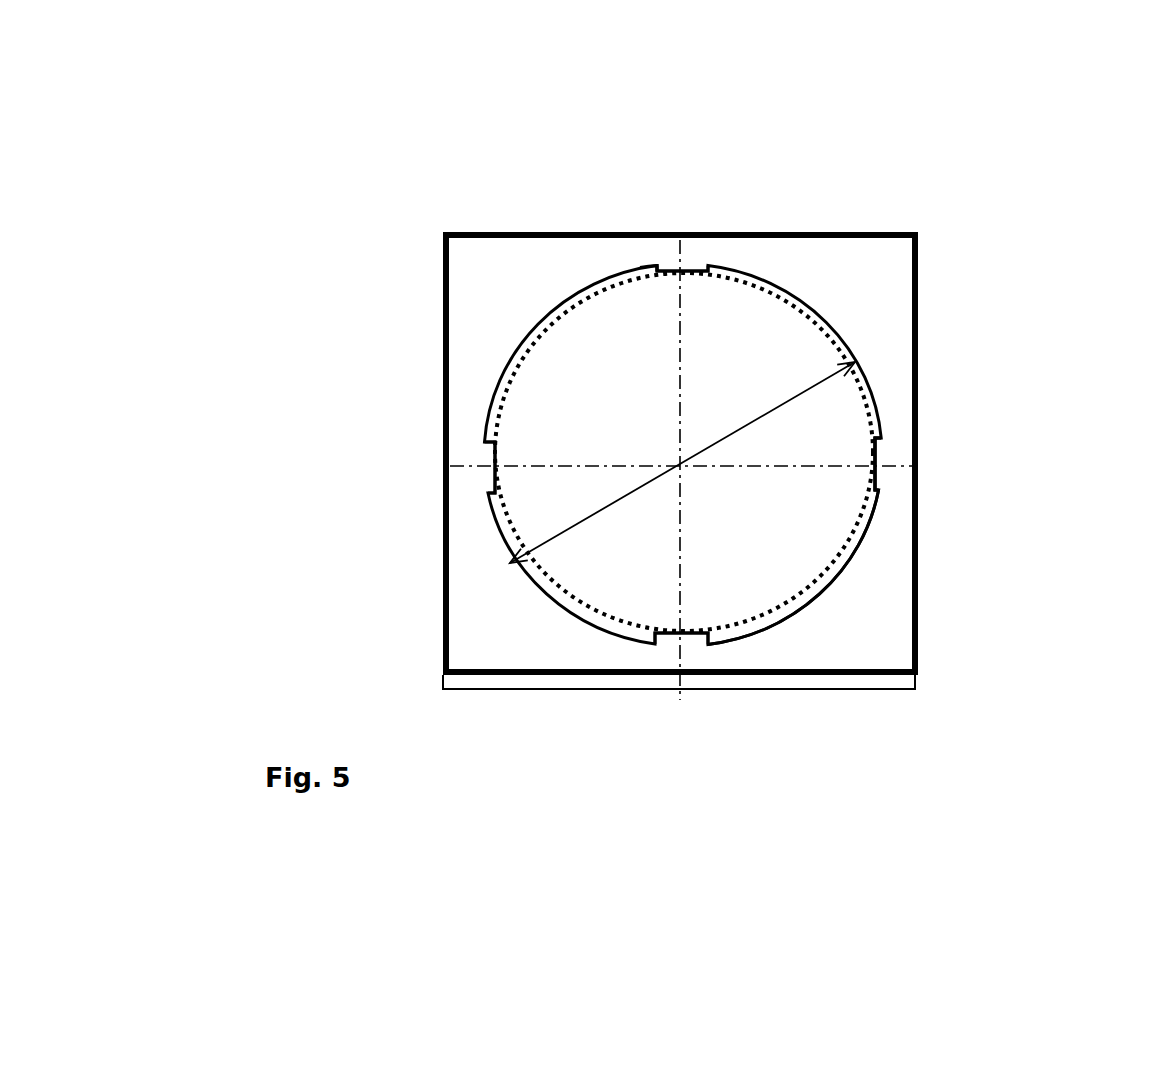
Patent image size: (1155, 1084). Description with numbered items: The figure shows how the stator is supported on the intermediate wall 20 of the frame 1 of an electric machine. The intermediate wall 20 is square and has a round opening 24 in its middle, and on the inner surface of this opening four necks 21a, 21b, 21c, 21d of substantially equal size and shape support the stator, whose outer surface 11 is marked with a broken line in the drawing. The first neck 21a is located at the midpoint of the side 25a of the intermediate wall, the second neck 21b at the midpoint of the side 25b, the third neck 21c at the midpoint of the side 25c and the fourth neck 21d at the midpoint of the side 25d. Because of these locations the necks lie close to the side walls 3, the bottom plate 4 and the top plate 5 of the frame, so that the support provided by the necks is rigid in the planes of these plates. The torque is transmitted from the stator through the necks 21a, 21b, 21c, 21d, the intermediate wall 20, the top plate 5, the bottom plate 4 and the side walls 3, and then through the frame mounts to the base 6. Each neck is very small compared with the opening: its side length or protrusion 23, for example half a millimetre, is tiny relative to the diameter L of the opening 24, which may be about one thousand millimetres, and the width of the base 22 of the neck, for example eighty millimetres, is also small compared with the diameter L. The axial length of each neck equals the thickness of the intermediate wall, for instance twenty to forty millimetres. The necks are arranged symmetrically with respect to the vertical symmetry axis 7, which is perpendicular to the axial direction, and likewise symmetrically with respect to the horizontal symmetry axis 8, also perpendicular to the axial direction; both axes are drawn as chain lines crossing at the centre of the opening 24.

The housing 1 is at (576, 233).
The side walls 3 is at (918, 568).
The bottom plate 4 is at (745, 673).
The top plate 5 is at (525, 232).
The base 6 is at (892, 683).
The vertical symmetry axis 7 is at (680, 327).
The horizontal symmetry axis 8 is at (593, 465).
The outer surface 11 is at (843, 578).
The intermediate wall 20 is at (870, 348).
The first neck 21a is at (694, 266).
The second neck 21b is at (485, 452).
The third neck 21c is at (692, 638).
The fourth neck 21d is at (882, 478).
The base of the neck 22 is at (877, 455).
The protrusion 23 is at (657, 264).
The opening 24 is at (492, 397).
The side of the intermediate wall 25a is at (845, 238).
The side of the intermediate wall 25b is at (447, 620).
The side of the intermediate wall 25c is at (493, 670).
The side of the intermediate wall 25d is at (912, 612).
The diameter of the opening L is at (558, 538).